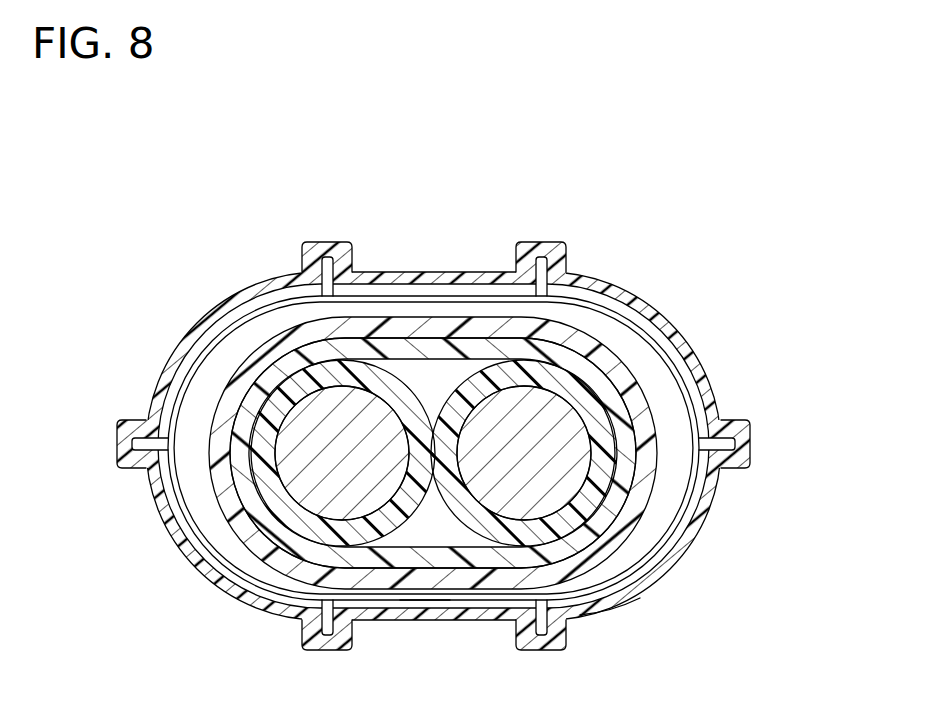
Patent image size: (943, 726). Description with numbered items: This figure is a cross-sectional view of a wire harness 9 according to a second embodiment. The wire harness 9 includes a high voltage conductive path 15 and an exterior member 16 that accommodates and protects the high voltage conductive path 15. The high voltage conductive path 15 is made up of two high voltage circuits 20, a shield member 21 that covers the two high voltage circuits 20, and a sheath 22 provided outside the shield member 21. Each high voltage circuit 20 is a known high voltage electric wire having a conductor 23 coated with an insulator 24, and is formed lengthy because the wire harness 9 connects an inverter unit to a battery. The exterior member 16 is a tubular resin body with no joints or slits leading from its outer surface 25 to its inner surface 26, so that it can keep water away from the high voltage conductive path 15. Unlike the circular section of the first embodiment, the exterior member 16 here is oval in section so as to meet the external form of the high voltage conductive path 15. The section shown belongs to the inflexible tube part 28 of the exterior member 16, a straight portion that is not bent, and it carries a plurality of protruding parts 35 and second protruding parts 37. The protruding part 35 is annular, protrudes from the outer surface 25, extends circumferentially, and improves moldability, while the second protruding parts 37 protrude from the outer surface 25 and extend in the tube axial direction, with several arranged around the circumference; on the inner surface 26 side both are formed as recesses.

The wire harness 9 is at (455, 420).
The high voltage conductive path 15 is at (498, 370).
The exterior member 16 is at (435, 430).
The high voltage circuit 20 is at (498, 349).
The shield member 21 is at (462, 314).
The sheath 22 is at (500, 334).
The conductor 23 is at (320, 377).
The insulator 24 is at (308, 410).
The outer surface 25 is at (707, 500).
The inner surface 26 is at (688, 488).
The inflexible tube part 28 is at (619, 612).
The protruding part 35 is at (424, 598).
The second protruding part 37 is at (333, 252).